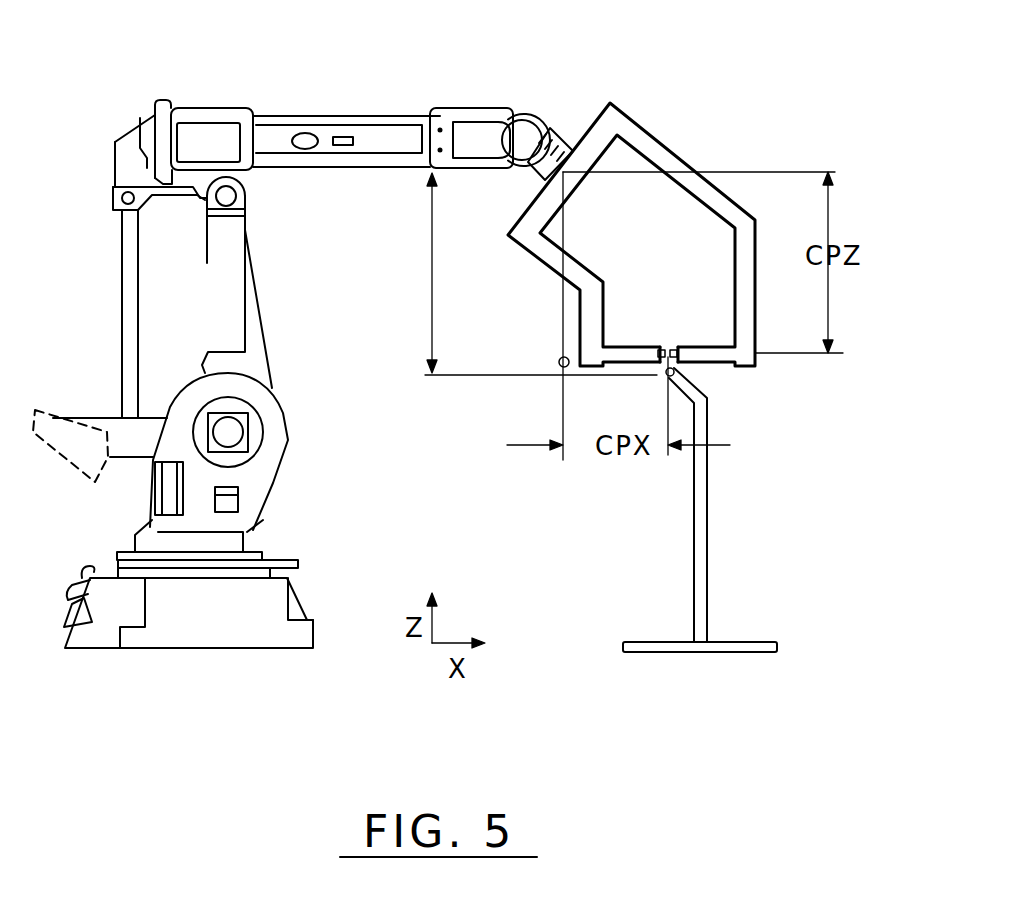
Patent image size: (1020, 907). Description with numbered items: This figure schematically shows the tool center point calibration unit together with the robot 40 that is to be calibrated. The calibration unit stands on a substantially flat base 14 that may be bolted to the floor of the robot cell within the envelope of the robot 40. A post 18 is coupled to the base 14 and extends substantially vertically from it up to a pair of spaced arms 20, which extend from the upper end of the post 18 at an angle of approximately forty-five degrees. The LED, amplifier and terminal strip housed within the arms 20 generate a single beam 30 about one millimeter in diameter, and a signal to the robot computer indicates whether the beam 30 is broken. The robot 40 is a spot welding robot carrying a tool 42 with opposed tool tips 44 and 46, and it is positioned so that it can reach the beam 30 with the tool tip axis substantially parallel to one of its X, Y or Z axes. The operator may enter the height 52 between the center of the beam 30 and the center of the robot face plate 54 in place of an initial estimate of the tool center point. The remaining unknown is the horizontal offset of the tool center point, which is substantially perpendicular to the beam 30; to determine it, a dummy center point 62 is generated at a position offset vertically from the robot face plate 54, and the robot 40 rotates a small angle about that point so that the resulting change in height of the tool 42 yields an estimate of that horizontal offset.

The base 14 is at (752, 642).
The post 18 is at (708, 577).
The arms 20 is at (704, 391).
The beam 30 is at (676, 368).
The robot 40 is at (288, 428).
The tool 42 is at (648, 130).
The tool tip 44 is at (662, 348).
The tool tip 46 is at (673, 349).
The height 52 is at (534, 274).
The robot face plate 54 is at (572, 148).
The dummy center point 62 is at (563, 357).